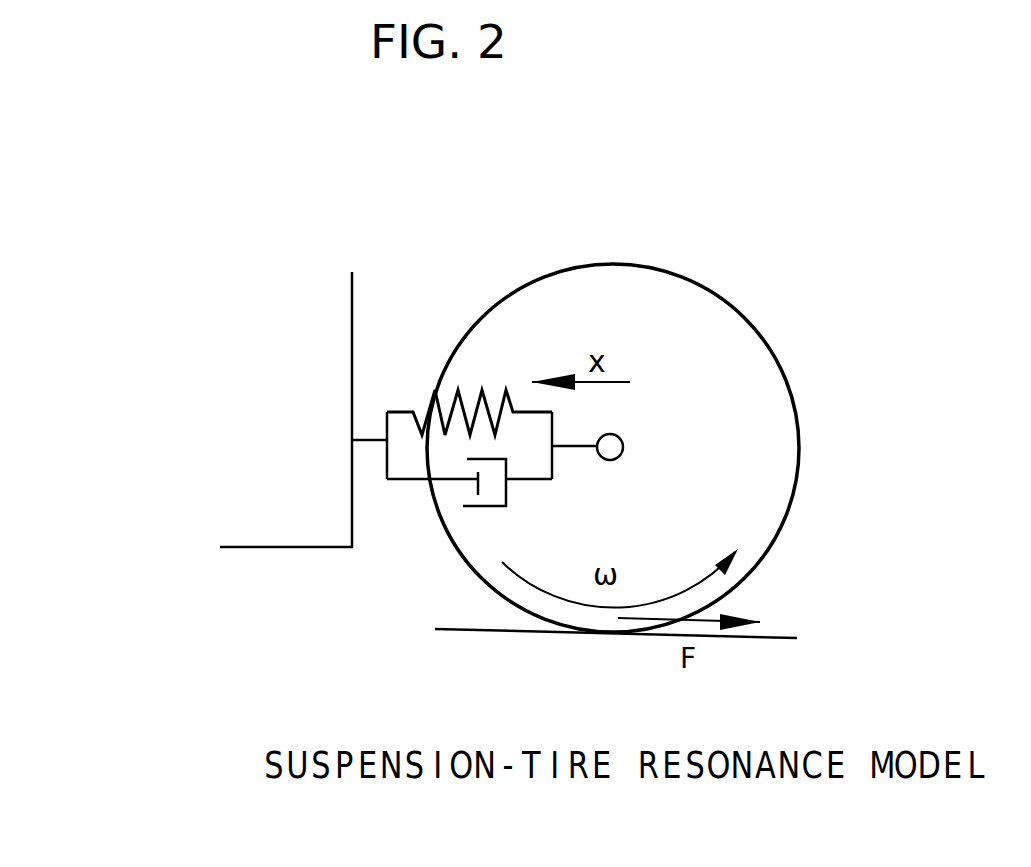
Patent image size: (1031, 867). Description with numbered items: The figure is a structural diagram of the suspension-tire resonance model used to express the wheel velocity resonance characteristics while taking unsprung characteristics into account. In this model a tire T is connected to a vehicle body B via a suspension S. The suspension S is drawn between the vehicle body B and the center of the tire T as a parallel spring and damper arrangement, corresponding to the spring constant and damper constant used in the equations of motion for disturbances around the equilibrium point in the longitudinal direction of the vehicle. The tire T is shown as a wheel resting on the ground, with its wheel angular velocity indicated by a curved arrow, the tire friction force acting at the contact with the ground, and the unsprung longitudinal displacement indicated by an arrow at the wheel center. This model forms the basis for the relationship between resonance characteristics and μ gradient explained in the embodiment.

The vehicle body B is at (341, 310).
The suspension S is at (403, 410).
The tire T is at (740, 315).